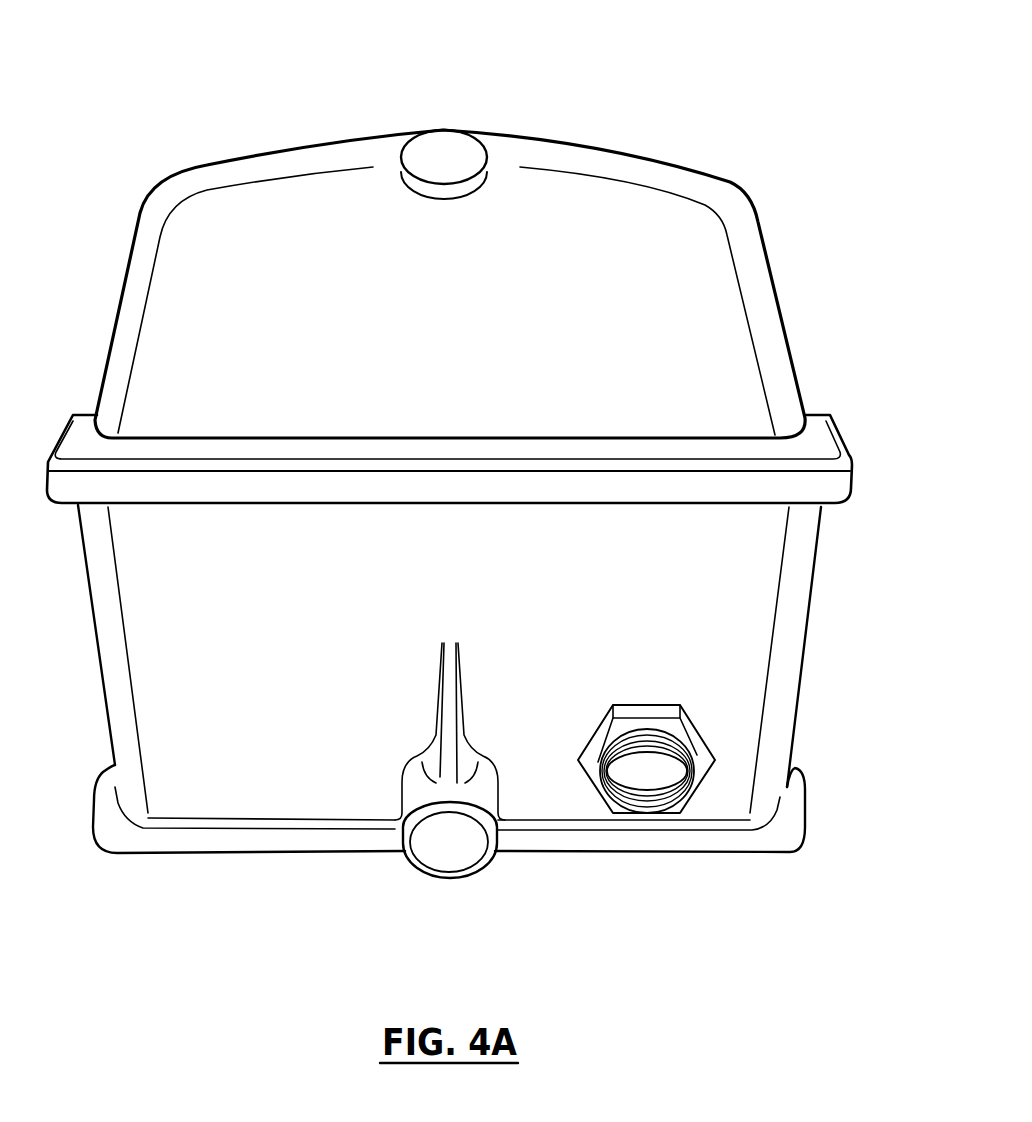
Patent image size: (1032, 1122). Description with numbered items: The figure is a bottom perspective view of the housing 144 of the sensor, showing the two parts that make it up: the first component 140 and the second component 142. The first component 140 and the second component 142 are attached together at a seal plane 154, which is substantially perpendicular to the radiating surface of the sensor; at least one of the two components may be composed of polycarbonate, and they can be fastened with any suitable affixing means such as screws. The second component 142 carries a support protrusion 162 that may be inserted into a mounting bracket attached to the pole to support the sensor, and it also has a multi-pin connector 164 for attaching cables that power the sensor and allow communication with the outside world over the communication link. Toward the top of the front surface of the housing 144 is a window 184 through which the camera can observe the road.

The first component 140 is at (697, 180).
The second component 142 is at (484, 552).
The housing 144 is at (778, 285).
The seal plane 154 is at (147, 480).
The support protrusion 162 is at (480, 783).
The multi-pin connector 164 is at (693, 720).
The window 184 is at (458, 143).